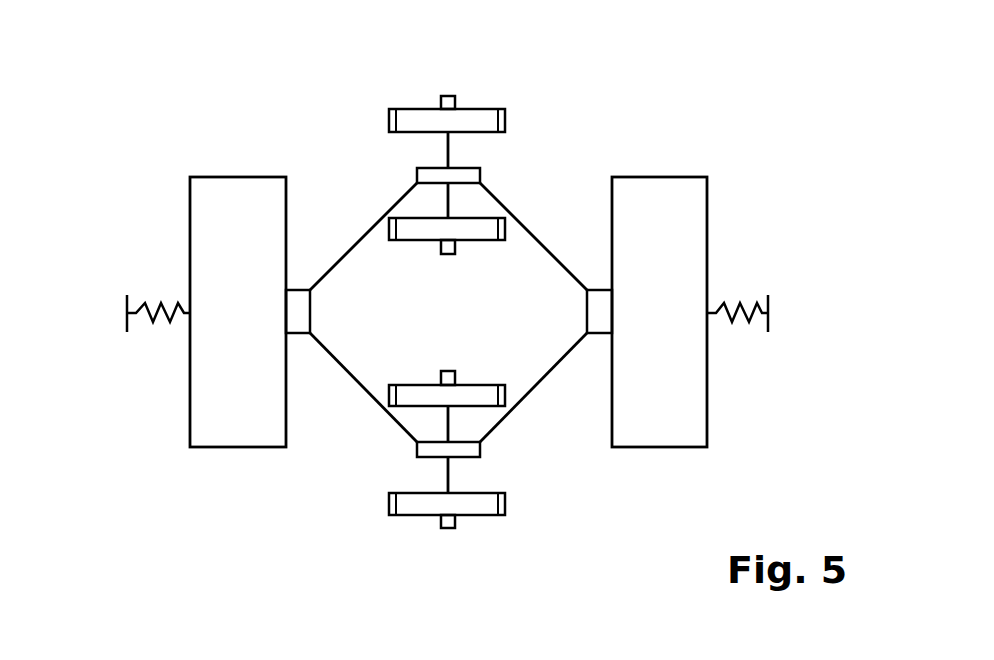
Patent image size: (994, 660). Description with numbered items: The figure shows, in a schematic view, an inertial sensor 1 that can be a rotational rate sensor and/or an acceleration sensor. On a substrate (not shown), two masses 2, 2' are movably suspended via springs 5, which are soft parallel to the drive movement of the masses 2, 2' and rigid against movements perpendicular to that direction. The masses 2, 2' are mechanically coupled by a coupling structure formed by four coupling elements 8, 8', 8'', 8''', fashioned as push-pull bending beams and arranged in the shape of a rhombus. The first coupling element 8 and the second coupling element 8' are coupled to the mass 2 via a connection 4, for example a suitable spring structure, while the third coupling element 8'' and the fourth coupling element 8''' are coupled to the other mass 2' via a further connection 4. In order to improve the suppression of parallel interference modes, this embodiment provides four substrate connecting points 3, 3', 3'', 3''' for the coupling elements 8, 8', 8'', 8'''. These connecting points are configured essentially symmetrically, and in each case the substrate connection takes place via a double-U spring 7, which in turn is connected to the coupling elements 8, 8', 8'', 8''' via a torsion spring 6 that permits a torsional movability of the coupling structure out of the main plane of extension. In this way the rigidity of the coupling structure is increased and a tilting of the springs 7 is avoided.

The inertial sensor 1 is at (698, 72).
The mass 2 is at (238, 287).
The mass 2' is at (659, 286).
The substrate connecting point 3 is at (450, 77).
The substrate connecting point 3' is at (454, 273).
The substrate connecting point 3'' is at (457, 350).
The substrate connecting point 3''' is at (457, 551).
The connection 4 is at (300, 288).
The spring 5 is at (158, 306).
The torsion spring 6 is at (452, 146).
The double-U spring 7 is at (508, 120).
The first coupling element 8 is at (363, 236).
The second coupling element 8' is at (363, 390).
The third coupling element 8'' is at (537, 390).
The fourth coupling element 8''' is at (541, 234).